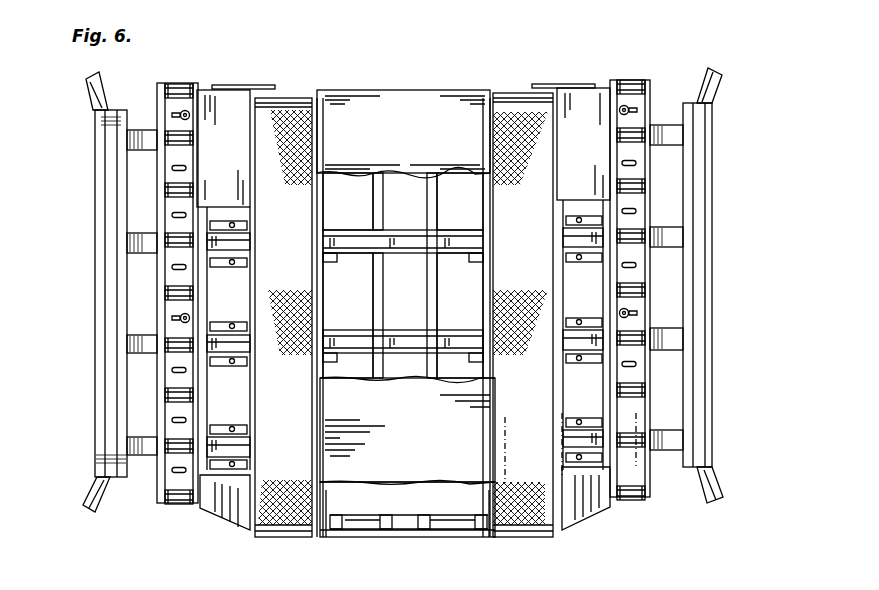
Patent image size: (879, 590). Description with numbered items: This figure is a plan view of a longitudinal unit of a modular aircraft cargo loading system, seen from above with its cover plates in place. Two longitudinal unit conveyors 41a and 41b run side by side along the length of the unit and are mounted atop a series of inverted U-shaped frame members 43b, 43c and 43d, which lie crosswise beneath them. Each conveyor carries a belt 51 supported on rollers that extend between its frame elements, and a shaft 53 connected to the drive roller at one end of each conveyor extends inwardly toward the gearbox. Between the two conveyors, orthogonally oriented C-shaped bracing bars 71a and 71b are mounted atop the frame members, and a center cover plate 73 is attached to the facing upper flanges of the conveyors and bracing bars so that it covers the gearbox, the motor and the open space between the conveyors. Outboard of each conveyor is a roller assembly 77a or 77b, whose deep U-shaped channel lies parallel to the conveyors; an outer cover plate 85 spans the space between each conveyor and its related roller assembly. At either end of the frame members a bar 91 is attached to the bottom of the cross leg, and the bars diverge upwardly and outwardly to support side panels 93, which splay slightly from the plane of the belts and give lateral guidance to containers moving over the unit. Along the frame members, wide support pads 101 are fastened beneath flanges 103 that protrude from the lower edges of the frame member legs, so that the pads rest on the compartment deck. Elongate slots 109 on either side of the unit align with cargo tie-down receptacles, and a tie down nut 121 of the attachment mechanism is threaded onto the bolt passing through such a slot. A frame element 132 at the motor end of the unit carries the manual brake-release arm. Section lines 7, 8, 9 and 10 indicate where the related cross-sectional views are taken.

The section line 7- 7 is at (85, 297).
The section line 8- 8 is at (632, 424).
The section line 9- 9 is at (554, 421).
The section line 10- 10 is at (497, 421).
The longitudinal unit conveyor 41a is at (545, 540).
The longitudinal unit conveyor 41b is at (290, 528).
The inverted U-shaped frame member 43b is at (342, 225).
The inverted U-shaped frame member 43c is at (342, 330).
The inverted U-shaped frame member 43d is at (242, 446).
The belt 51 is at (294, 232).
The shaft 53 is at (352, 530).
The bracing bar 71a is at (378, 325).
The bracing bar 71b is at (378, 222).
The center cover plate 73 is at (403, 100).
The roller assembly 77a is at (632, 502).
The roller assembly 77b is at (178, 505).
The outer cover plate 85 is at (222, 112).
The bar 91 is at (140, 132).
The side panel 93 is at (106, 386).
The wide support pad 101 is at (222, 322).
The flange 103 is at (240, 425).
The slot 109 is at (180, 420).
The tie down nut 121 is at (190, 118).
The frame element 132 is at (410, 528).